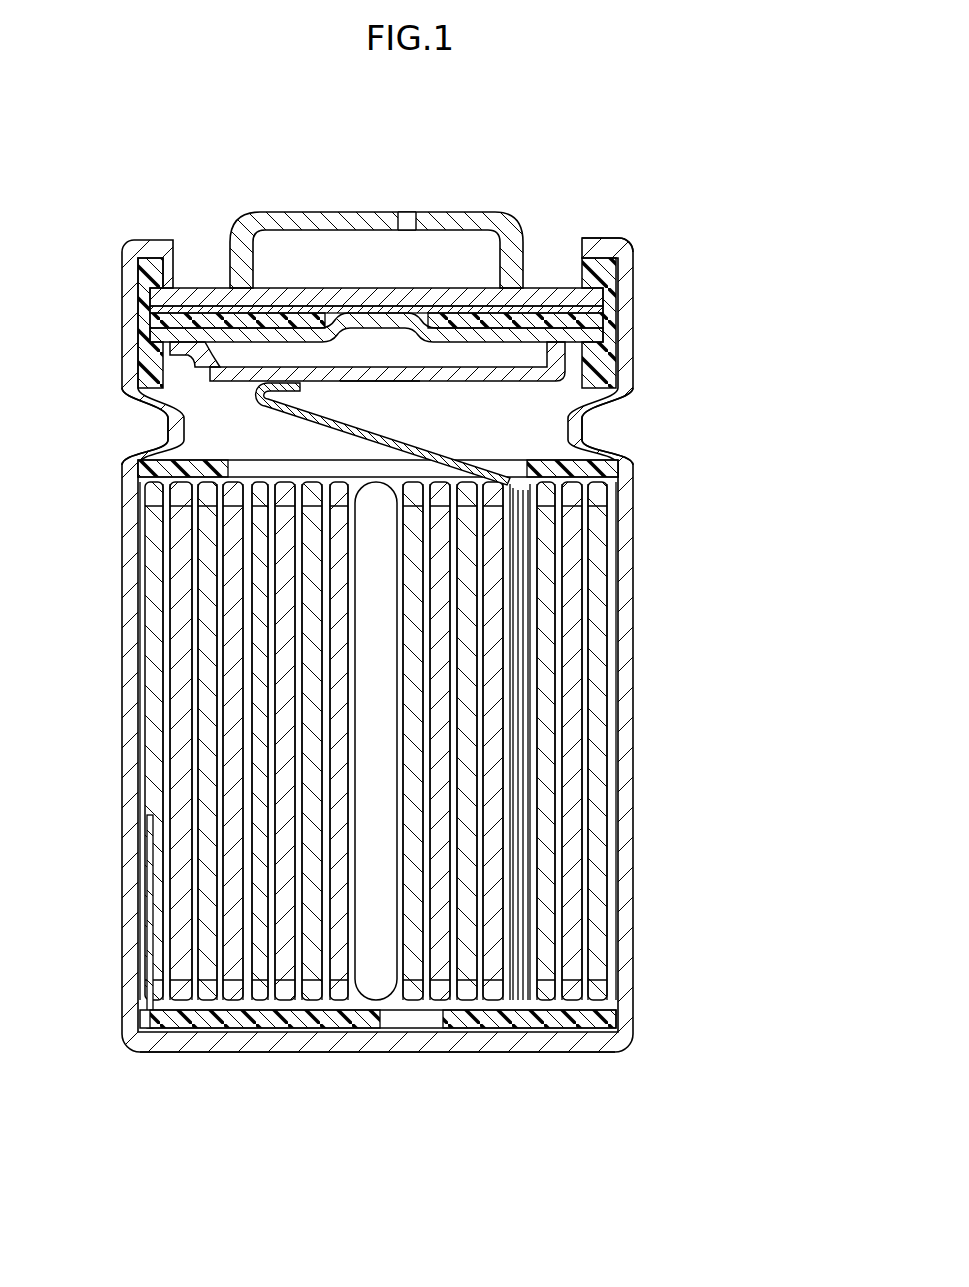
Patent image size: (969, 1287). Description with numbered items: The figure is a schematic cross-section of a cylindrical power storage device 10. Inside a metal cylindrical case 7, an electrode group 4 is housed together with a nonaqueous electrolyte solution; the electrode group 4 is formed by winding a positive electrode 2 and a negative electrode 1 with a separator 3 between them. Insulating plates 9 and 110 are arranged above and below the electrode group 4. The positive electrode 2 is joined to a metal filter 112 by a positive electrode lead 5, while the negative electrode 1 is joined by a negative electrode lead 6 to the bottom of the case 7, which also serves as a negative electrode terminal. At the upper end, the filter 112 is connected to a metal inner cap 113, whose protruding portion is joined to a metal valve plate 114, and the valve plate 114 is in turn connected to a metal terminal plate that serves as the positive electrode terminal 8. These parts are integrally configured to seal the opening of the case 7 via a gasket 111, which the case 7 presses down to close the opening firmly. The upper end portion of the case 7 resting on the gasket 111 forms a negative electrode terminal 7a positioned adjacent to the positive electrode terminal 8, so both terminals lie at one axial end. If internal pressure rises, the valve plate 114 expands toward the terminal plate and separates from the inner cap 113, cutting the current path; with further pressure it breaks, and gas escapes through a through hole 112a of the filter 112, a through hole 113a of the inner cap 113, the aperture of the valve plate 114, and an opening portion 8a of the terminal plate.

The negative electrode 1 is at (600, 730).
The positive electrode 2 is at (573, 763).
The separator 3 is at (615, 695).
The electrode group 4 is at (446, 741).
The positive electrode lead 5 is at (253, 437).
The negative electrode lead 6 is at (418, 1046).
The case 7 is at (132, 660).
The negative electrode terminal 7a is at (606, 240).
The positive electrode terminal 8 is at (460, 212).
The opening portion 8a is at (377, 223).
The insulating plate 9 is at (614, 470).
The power storage device 10 is at (632, 156).
The insulating plate 110 is at (613, 1014).
The gasket 111 is at (607, 272).
The filter 112 is at (560, 377).
The through hole 112a is at (377, 381).
The inner cap 113 is at (292, 333).
The through hole 113a is at (272, 304).
The valve plate 114 is at (257, 297).